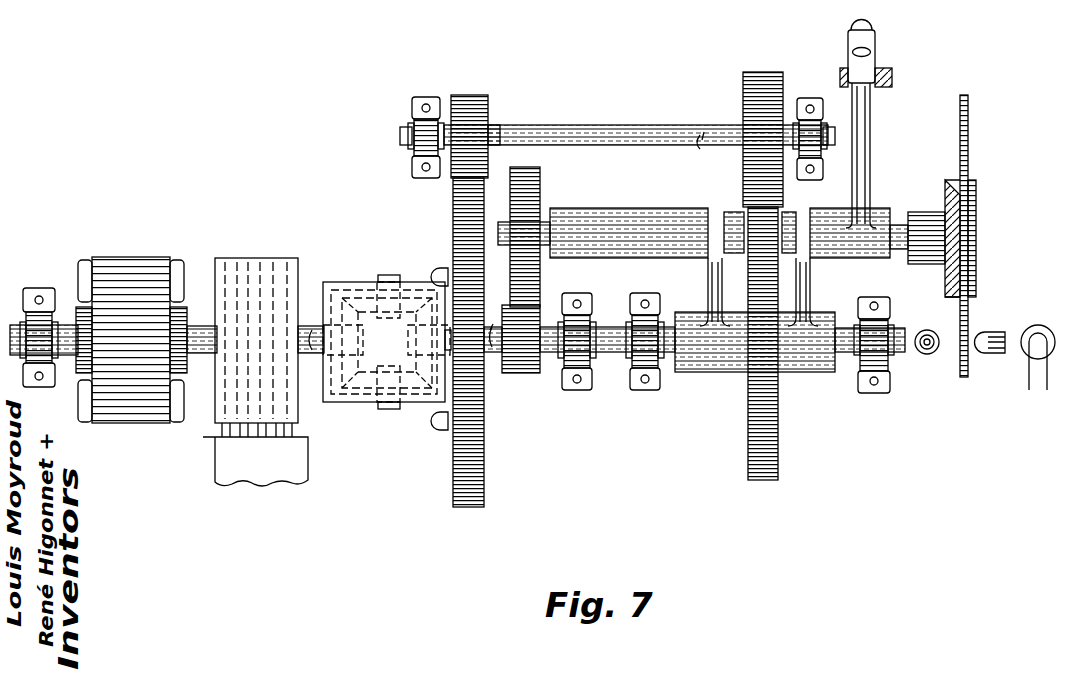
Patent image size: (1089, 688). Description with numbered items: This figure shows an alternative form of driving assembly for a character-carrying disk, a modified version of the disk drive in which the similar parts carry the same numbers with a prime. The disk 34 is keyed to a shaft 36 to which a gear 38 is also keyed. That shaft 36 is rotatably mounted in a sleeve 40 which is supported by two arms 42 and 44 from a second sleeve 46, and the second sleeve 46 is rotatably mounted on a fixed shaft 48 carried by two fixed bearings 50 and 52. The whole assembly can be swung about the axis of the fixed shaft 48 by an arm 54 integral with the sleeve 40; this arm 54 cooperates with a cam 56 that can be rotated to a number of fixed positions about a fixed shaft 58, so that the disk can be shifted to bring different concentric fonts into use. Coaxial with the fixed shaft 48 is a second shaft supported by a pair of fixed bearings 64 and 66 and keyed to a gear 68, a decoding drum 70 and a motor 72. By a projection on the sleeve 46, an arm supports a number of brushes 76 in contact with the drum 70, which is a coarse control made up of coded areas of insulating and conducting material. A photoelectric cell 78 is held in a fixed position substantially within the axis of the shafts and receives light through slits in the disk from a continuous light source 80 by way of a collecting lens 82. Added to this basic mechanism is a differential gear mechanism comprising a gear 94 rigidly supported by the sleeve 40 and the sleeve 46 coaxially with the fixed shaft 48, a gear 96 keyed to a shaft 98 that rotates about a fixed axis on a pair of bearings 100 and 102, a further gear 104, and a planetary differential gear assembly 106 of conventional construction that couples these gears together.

The disk 34 is at (969, 112).
The shaft 36 is at (898, 215).
The gear 38 is at (541, 184).
The sleeve 40 is at (636, 211).
The arm 42 is at (712, 296).
The arm 44 is at (808, 277).
The second sleeve 46 is at (714, 374).
The fixed shaft 48 is at (846, 328).
The fixed bearing 50 is at (648, 389).
The fixed bearing 52 is at (882, 390).
The arm 54 is at (868, 133).
The cam 56 is at (850, 30).
The fixed shaft 58 is at (880, 68).
The fixed bearing 64 is at (40, 276).
The fixed bearing 66 is at (582, 389).
The gear 68 is at (527, 377).
The decoding drum 70 is at (255, 264).
The motor 72 is at (123, 264).
The brushes 76 is at (298, 440).
The photoelectric cell 78 is at (928, 354).
The continuous light source 80 is at (1044, 321).
The collecting lens 82 is at (988, 332).
The gear 94 is at (774, 463).
The gear 96 is at (769, 72).
The shaft 98 is at (574, 130).
The bearing 100 is at (416, 97).
The bearing 102 is at (810, 92).
The gear 104 is at (489, 110).
The planetary differential gear assembly 106 is at (345, 274).